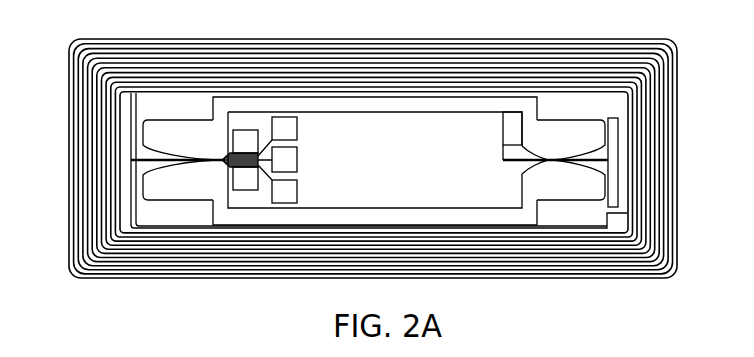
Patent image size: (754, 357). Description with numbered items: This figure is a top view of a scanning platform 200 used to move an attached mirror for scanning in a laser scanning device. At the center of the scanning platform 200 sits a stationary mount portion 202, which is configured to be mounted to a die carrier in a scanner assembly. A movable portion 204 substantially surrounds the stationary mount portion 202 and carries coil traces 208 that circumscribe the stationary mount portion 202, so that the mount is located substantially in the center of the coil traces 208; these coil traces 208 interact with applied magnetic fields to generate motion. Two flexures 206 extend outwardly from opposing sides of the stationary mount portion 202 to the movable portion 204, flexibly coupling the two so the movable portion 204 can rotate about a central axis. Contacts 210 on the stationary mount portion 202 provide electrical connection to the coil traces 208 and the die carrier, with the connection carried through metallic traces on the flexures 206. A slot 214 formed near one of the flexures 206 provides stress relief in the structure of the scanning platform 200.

The scanning platform 200 is at (623, 38).
The stationary mount portion 202 is at (405, 173).
The movable portion 204 is at (508, 38).
The flexures 206 is at (178, 158).
The coil traces 208 is at (318, 48).
The contacts 210 is at (290, 114).
The slot 214 is at (613, 118).